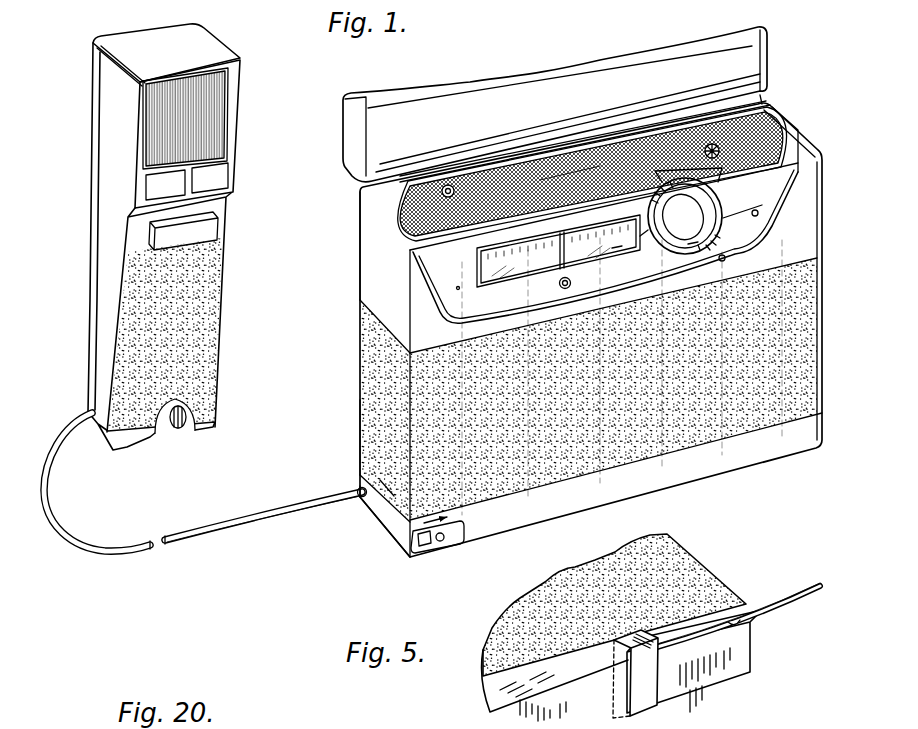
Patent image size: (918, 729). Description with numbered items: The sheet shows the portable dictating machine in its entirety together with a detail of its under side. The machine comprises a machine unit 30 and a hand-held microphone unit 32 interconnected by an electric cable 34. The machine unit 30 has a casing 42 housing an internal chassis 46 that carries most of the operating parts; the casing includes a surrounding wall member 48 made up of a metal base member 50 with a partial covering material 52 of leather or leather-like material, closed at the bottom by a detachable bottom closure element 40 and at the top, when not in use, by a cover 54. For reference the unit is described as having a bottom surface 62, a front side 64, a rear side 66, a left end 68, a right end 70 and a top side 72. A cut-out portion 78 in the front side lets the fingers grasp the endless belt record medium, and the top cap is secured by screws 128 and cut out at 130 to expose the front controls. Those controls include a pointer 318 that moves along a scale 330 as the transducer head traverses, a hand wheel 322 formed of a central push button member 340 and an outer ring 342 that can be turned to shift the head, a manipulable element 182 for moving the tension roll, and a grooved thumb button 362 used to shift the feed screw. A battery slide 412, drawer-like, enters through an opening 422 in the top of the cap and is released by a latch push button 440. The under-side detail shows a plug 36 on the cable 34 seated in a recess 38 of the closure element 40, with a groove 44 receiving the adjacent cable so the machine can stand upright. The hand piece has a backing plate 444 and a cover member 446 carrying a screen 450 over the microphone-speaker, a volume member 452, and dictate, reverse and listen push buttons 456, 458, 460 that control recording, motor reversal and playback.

In FIG. 1, the machine unit 30 is at (335, 95).
In FIG. 1, the microphone unit 32 is at (242, 56).
In FIG. 1, the electric cable 34 is at (229, 523).
In FIG. 5, the electric cable 34 is at (797, 612).
In FIG. 5, the plug 36 is at (652, 700).
In FIG. 5, the recess 38 is at (632, 692).
In FIG. 1, the bottom closure element 40 is at (386, 520).
In FIG. 5, the bottom closure element 40 is at (497, 686).
In FIG. 1, the casing 42 is at (356, 322).
In FIG. 5, the casing 42 is at (702, 562).
In FIG. 1, the groove 44 is at (356, 498).
In FIG. 5, the groove 44 is at (736, 618).
In FIG. 1, the chassis 46 is at (393, 210).
In FIG. 1, the surrounding wall member 48 is at (358, 369).
In FIG. 1, the metal base member 50 is at (358, 256).
In FIG. 1, the covering material 52 is at (358, 409).
In FIG. 1, the cover 54 is at (448, 86).
In FIG. 5, the bottom surface 62 is at (738, 665).
In FIG. 1, the front side 64 is at (770, 418).
In FIG. 1, the rear side 66 is at (356, 448).
In FIG. 1, the left end 68 is at (388, 488).
In FIG. 1, the right end 70 is at (783, 108).
In FIG. 1, the top side 72 is at (803, 137).
In FIG. 1, the cut-out portion 78 is at (722, 262).
In FIG. 1, the screws 128 is at (758, 216).
In FIG. 1, the cut-out 130 is at (458, 262).
In FIG. 1, the manipulable element 182 is at (458, 546).
In FIG. 1, the pointer 318 is at (558, 262).
In FIG. 1, the hand wheel 322 is at (678, 256).
In FIG. 1, the scale 330 is at (617, 252).
In FIG. 1, the central push button member 340 is at (692, 224).
In FIG. 1, the outer ring 342 is at (693, 246).
In FIG. 1, the button 362 is at (712, 144).
In FIG. 1, the slide 412 is at (525, 165).
In FIG. 1, the opening 422 is at (600, 166).
In FIG. 1, the push button 440 is at (574, 282).
In FIG. 1, the backing plate 444 is at (88, 276).
In FIG. 1, the cover member 446 is at (100, 316).
In FIG. 1, the screen 450 is at (212, 96).
In FIG. 1, the hand manipulable member 452 is at (178, 426).
In FIG. 1, the push button 456 is at (216, 227).
In FIG. 1, the push button 458 is at (224, 184).
In FIG. 1, the push button 460 is at (150, 197).